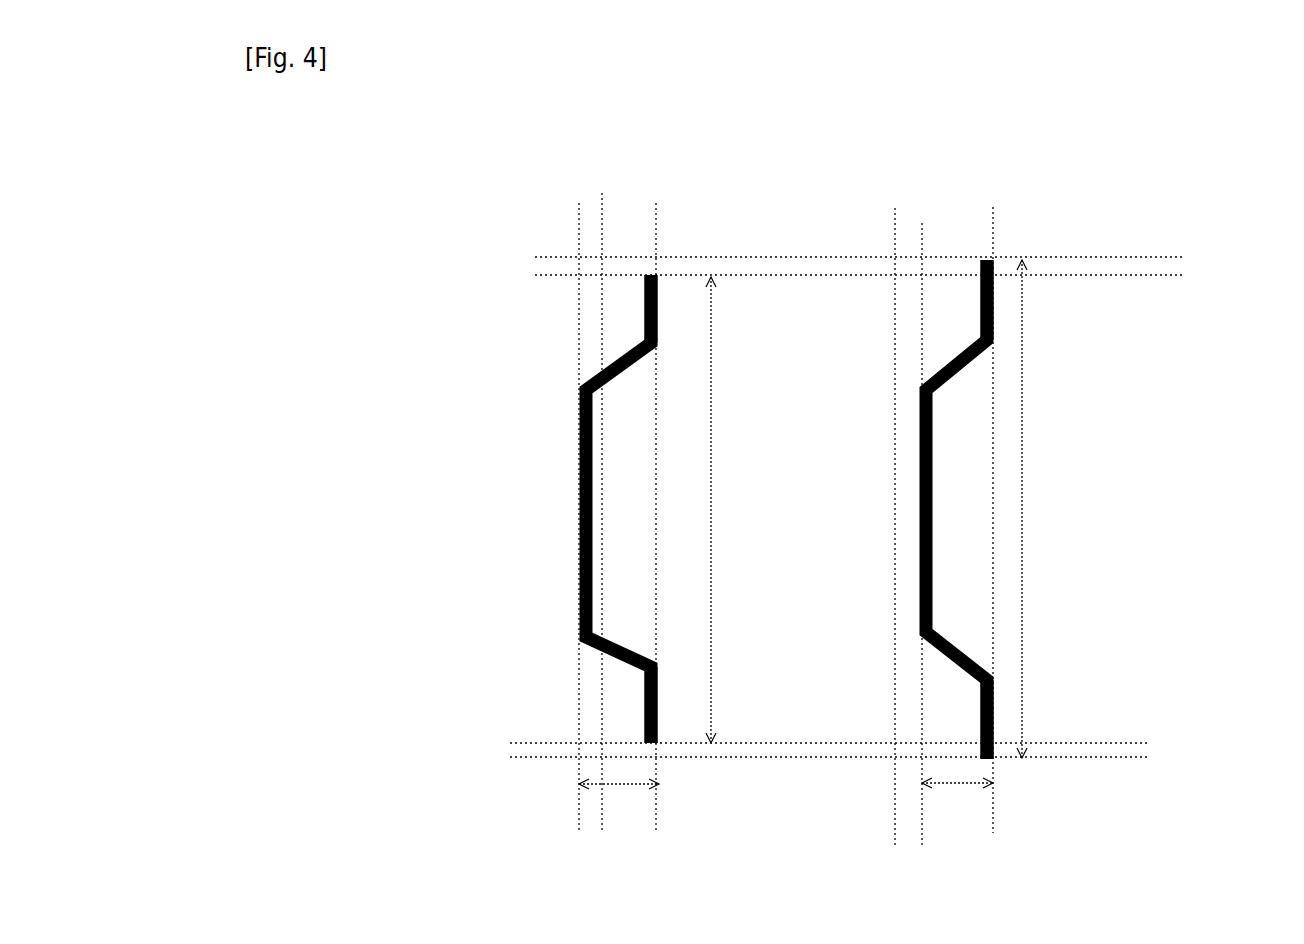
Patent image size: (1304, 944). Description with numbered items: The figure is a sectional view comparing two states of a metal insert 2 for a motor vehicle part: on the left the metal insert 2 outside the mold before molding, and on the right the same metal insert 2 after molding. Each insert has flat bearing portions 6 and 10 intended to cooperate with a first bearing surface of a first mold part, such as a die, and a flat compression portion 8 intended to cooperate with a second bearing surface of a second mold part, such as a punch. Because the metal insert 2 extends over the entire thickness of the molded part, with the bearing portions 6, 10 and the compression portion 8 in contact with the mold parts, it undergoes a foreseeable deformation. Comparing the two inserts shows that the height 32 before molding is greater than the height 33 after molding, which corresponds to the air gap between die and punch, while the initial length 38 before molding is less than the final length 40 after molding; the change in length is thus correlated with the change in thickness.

The metal insert 2 is at (495, 493).
The bearing portion 6 is at (660, 313).
The compression portion 8 is at (577, 532).
The bearing portion 10 is at (660, 705).
The height of the metal insert before molding 32 is at (615, 785).
The height of the metal insert after molding 33 is at (955, 787).
The initial length of the metal insert 38 is at (713, 380).
The final length of the metal insert 40 is at (1022, 410).